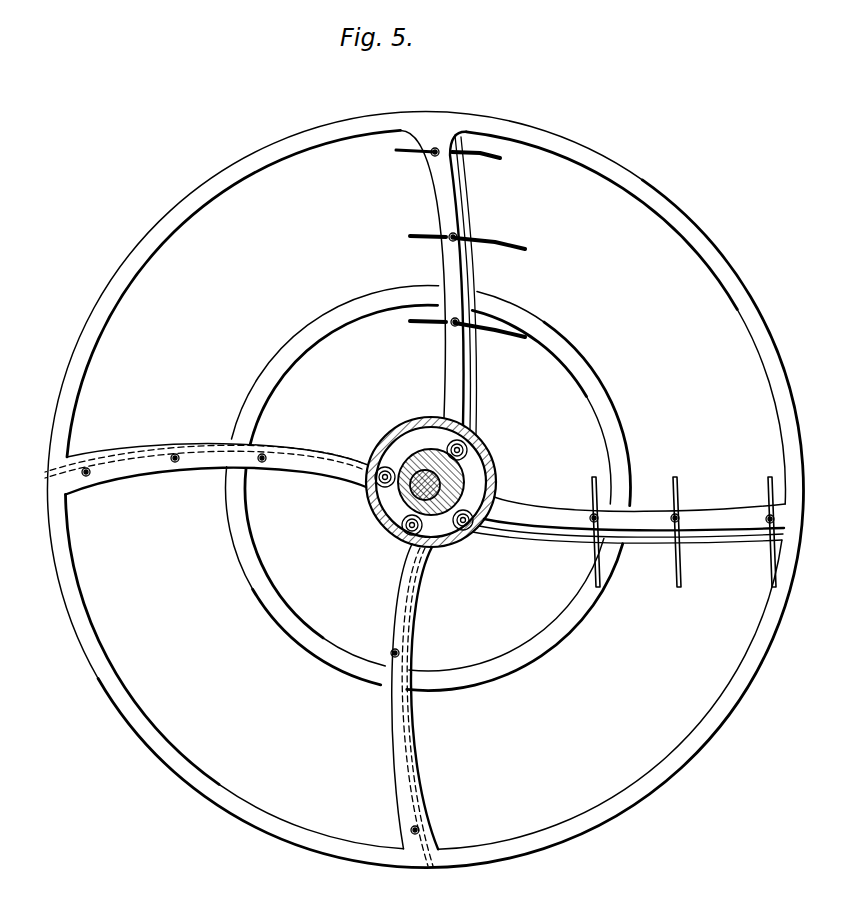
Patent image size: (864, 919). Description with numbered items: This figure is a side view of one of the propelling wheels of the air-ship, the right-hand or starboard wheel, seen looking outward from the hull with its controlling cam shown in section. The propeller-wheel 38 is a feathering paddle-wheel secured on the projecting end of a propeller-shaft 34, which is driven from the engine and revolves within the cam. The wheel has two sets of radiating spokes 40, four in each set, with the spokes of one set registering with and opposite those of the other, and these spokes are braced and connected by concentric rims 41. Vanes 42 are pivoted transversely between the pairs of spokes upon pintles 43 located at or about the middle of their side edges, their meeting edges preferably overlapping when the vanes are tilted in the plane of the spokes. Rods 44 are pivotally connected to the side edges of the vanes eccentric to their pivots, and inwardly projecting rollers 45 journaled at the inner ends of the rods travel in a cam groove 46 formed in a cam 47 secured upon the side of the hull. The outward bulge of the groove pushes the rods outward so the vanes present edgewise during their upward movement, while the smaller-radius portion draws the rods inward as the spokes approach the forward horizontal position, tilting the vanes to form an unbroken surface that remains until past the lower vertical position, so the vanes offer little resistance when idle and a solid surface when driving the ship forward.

The propeller-shaft 34 is at (492, 467).
The propeller-wheel 38 is at (425, 490).
The spokes 40 is at (452, 381).
The concentric rims 41 is at (600, 400).
The vanes 42 is at (482, 160).
The pintles 43 is at (432, 155).
The rods 44 is at (480, 272).
The rollers 45 is at (447, 448).
The cam groove 46 is at (470, 453).
The cam 47 is at (492, 468).